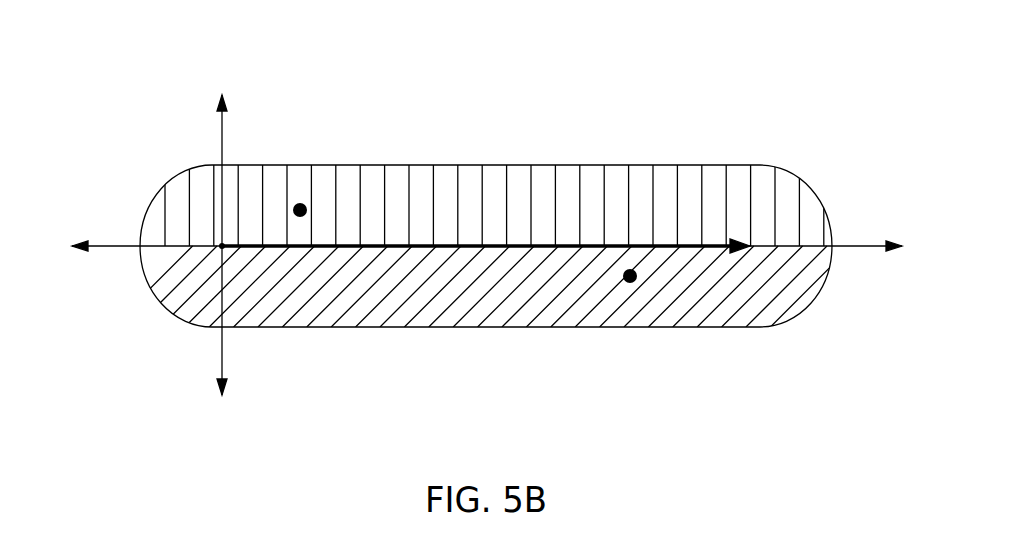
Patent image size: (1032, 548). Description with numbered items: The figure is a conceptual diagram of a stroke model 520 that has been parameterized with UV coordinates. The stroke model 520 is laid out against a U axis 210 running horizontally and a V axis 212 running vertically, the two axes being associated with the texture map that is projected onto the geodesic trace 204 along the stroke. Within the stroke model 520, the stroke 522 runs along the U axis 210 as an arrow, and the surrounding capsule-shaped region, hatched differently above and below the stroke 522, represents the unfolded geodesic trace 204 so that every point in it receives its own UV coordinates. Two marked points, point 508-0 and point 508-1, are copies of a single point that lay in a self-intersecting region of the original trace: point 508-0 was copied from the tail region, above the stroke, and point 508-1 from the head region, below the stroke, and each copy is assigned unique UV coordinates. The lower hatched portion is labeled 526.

The stroke model 520 is at (735, 52).
The geodesic trace 204 is at (276, 246).
The stroke 522 is at (568, 248).
The point 508-0 is at (300, 217).
The point 508-1 is at (633, 283).
The stroke width region 526 is at (688, 328).
The U axis 210 is at (857, 248).
The V axis 212 is at (222, 364).